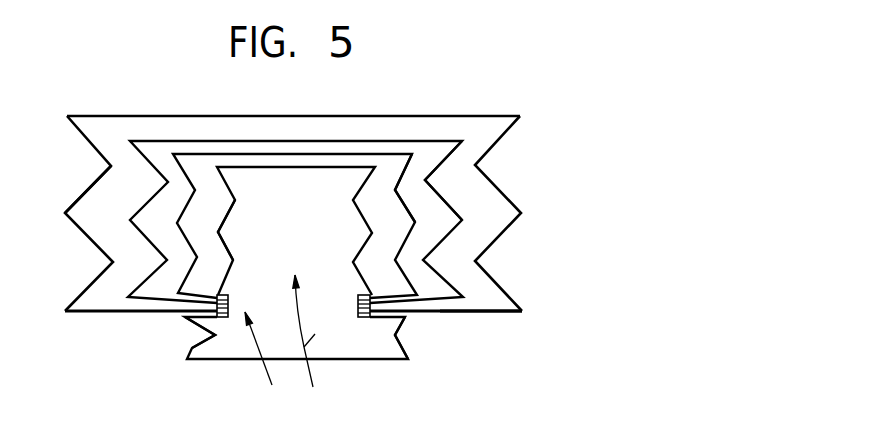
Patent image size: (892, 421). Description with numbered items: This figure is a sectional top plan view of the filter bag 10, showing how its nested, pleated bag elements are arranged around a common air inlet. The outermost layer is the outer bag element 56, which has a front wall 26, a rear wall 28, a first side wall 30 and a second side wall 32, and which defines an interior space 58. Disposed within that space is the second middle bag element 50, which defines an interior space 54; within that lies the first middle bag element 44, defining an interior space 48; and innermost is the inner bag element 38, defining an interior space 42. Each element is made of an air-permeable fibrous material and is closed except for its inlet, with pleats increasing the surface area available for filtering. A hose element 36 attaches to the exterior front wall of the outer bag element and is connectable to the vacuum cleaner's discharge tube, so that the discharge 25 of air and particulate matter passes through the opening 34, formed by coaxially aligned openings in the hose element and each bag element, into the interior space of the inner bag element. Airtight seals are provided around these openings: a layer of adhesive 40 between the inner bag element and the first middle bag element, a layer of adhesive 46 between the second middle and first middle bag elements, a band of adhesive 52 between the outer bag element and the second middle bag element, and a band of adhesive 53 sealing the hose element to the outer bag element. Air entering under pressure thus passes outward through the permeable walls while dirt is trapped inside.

The filter bag 10 is at (522, 193).
The discharge 25 is at (319, 347).
The front wall 26 is at (483, 312).
The rear wall 28 is at (472, 117).
The first side wall 30 is at (93, 280).
The second side wall 32 is at (507, 288).
The opening 34 is at (267, 365).
The hose element 36 is at (218, 360).
The inner bag element 38 is at (283, 165).
The layer of adhesive 40 is at (228, 297).
The interior space 42 is at (302, 200).
The first middle bag element 44 is at (377, 149).
The layer of adhesive 46 is at (202, 338).
The interior space 48 is at (388, 173).
The second middle bag element 50 is at (225, 138).
The band of adhesive 52 is at (366, 318).
The band of adhesive 53 is at (394, 332).
The interior space 54 is at (163, 157).
The outer bag element 56 is at (100, 117).
The interior space 58 is at (115, 190).